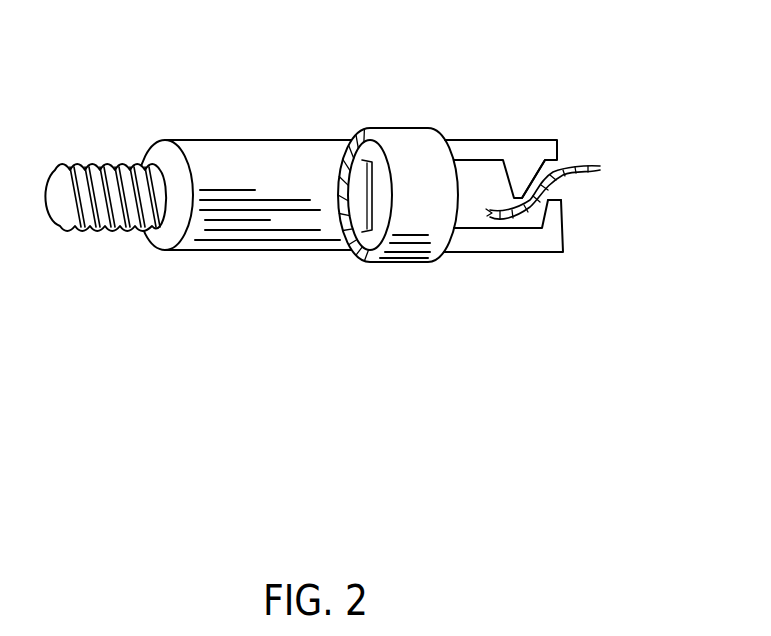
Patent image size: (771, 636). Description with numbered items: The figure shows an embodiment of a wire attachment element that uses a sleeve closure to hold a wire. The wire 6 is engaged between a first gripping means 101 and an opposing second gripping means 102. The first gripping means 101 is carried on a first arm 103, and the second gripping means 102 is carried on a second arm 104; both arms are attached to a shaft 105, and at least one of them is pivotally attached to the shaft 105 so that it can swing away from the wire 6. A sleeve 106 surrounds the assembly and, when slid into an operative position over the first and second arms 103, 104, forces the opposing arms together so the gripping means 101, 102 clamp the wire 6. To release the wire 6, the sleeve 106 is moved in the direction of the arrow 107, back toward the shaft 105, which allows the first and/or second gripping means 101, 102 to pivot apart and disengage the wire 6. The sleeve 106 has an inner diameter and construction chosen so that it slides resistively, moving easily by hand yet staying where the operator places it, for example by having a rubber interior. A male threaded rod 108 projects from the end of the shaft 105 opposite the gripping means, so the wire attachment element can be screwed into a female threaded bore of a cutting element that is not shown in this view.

The wire 6 is at (600, 168).
The first gripping means 101 is at (563, 228).
The second gripping means 102 is at (540, 172).
The first arm 103 is at (482, 251).
The second arm 104 is at (525, 139).
The shaft 105 is at (265, 136).
The sleeve 106 is at (393, 128).
The arrow 107 is at (403, 292).
The male threaded rod 108 is at (105, 231).